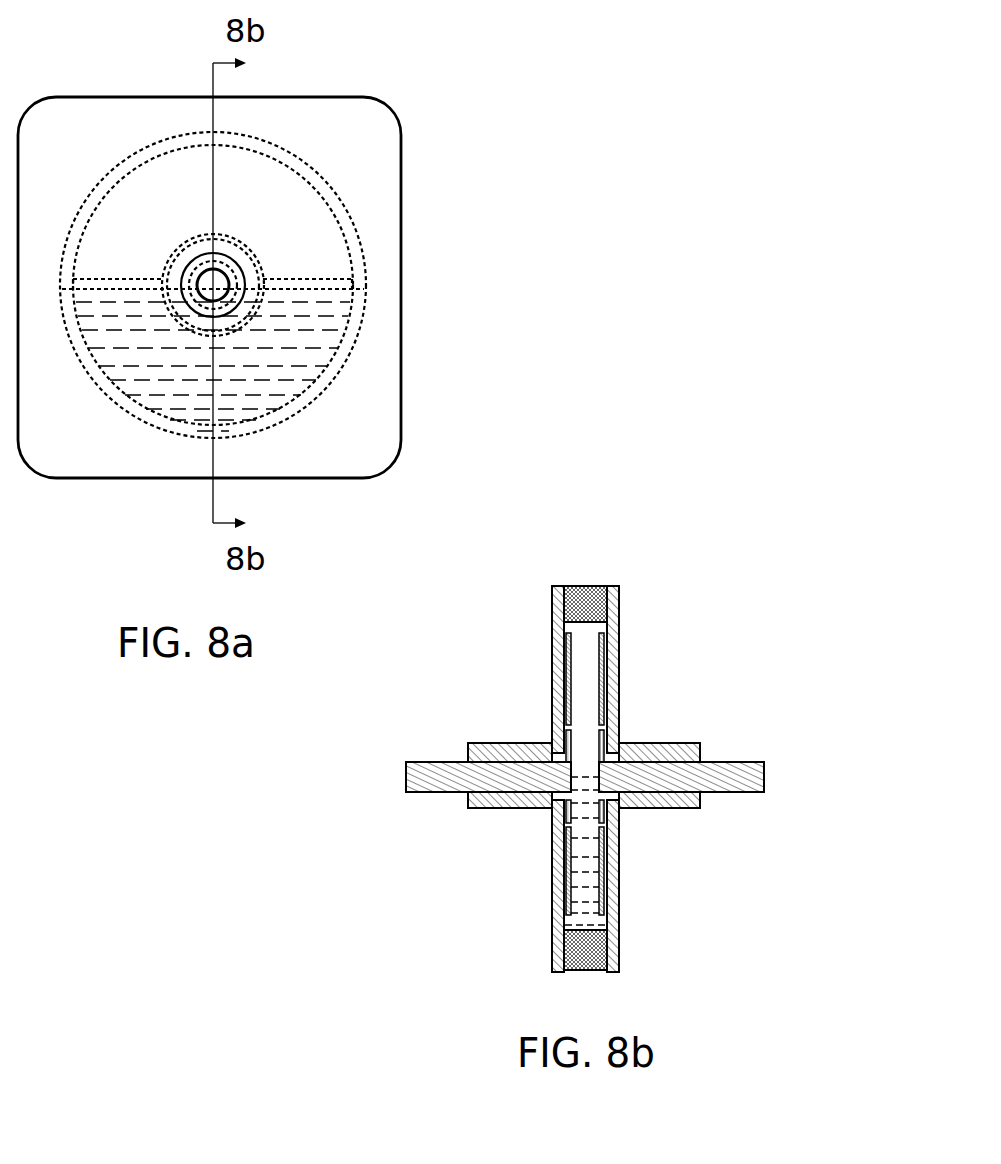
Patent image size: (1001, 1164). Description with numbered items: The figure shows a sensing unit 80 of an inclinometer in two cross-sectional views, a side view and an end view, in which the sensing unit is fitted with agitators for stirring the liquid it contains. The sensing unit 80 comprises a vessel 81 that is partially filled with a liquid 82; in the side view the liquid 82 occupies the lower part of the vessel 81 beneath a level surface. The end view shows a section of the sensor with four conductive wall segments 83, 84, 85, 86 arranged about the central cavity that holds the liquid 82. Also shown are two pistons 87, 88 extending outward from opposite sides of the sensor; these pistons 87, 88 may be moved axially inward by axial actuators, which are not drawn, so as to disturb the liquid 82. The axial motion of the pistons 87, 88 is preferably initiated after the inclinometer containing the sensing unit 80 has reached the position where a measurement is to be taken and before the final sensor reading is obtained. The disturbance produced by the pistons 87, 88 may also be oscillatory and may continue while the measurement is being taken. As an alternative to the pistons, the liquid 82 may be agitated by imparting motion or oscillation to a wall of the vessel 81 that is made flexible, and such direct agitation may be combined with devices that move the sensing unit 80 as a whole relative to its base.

In FIG. 8a, the sensing unit 80 is at (431, 86).
In FIG. 8b, the sensing unit 80 is at (623, 558).
In FIG. 8a, the vessel 81 is at (328, 190).
In FIG. 8b, the vessel 81 is at (583, 672).
In FIG. 8a, the liquid 82 is at (177, 290).
In FIG. 8b, the liquid 82 is at (588, 877).
In FIG. 8b, the conductive wall segment 83 is at (604, 847).
In FIG. 8b, the conductive wall segment 84 is at (565, 864).
In FIG. 8b, the conductive wall segment 85 is at (603, 704).
In FIG. 8b, the conductive wall segment 86 is at (565, 703).
In FIG. 8b, the piston 87 is at (413, 770).
In FIG. 8b, the piston 88 is at (743, 775).